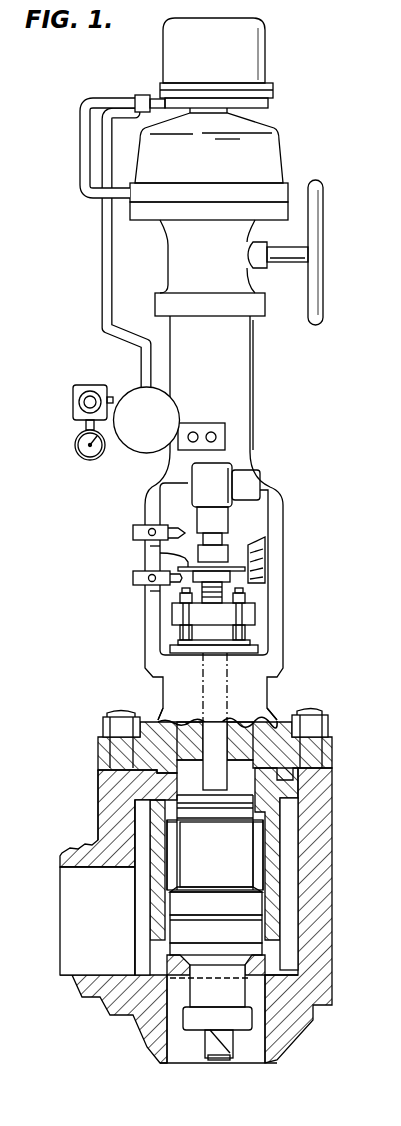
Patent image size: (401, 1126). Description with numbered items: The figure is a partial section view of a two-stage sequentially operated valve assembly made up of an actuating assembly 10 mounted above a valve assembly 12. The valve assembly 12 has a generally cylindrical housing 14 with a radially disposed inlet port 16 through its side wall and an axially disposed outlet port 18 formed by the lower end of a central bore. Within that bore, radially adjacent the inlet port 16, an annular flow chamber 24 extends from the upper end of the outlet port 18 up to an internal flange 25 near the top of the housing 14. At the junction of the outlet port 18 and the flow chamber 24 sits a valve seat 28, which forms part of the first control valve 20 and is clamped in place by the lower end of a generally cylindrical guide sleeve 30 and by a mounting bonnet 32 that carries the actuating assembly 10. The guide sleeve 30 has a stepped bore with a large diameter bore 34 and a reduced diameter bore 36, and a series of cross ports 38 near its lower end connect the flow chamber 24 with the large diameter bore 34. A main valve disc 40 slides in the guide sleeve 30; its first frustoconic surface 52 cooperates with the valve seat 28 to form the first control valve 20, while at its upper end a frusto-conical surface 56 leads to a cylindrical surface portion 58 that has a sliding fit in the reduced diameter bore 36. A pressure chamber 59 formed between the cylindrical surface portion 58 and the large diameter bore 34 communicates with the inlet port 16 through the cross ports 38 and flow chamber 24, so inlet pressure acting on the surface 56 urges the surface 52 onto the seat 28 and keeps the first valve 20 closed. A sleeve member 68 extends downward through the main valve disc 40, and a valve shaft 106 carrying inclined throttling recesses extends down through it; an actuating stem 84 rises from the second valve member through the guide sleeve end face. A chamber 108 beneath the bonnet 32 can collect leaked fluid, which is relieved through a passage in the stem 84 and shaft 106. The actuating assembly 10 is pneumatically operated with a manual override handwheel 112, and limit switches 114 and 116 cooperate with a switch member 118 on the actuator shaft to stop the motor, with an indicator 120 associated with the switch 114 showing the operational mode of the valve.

The actuating assembly 10 is at (138, 497).
The valve assembly 12 is at (95, 738).
The housing 14 is at (100, 781).
The inlet port 16 is at (82, 869).
The outlet port 18 is at (258, 1063).
The first control valve 20 is at (228, 917).
The annular flow chamber 24 is at (145, 892).
The internal flange 25 is at (173, 783).
The valve seat 28 is at (268, 977).
The guide sleeve 30 is at (298, 858).
The mounting bonnet 32 is at (263, 720).
The large diameter bore 34 is at (263, 878).
The reduced diameter bore 36 is at (250, 786).
The cross ports 38 is at (265, 908).
The main valve disc 40 is at (260, 935).
The first frustoconic surface 52 is at (227, 952).
The frusto-conical surface 56 is at (225, 885).
The cylindrical surface portion 58 is at (238, 848).
The pressure chamber 59 is at (260, 827).
The sleeve member 68 is at (195, 992).
The actuating stem 84 is at (215, 778).
The valve shaft 106 is at (220, 1052).
The chamber 108 is at (186, 777).
The handwheel 112 is at (313, 189).
The limit switch 114 is at (133, 531).
The limit switch 116 is at (133, 578).
The switch member 118 is at (187, 562).
The indicator 120 is at (263, 537).